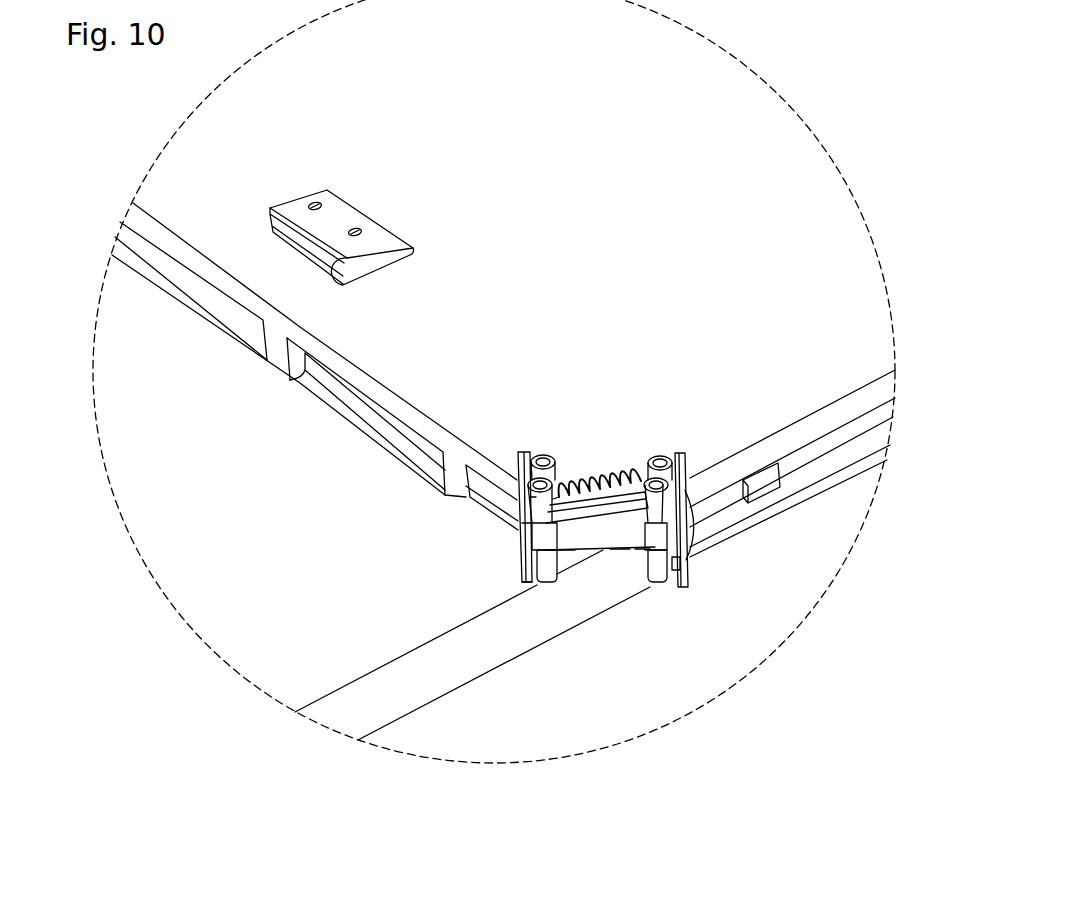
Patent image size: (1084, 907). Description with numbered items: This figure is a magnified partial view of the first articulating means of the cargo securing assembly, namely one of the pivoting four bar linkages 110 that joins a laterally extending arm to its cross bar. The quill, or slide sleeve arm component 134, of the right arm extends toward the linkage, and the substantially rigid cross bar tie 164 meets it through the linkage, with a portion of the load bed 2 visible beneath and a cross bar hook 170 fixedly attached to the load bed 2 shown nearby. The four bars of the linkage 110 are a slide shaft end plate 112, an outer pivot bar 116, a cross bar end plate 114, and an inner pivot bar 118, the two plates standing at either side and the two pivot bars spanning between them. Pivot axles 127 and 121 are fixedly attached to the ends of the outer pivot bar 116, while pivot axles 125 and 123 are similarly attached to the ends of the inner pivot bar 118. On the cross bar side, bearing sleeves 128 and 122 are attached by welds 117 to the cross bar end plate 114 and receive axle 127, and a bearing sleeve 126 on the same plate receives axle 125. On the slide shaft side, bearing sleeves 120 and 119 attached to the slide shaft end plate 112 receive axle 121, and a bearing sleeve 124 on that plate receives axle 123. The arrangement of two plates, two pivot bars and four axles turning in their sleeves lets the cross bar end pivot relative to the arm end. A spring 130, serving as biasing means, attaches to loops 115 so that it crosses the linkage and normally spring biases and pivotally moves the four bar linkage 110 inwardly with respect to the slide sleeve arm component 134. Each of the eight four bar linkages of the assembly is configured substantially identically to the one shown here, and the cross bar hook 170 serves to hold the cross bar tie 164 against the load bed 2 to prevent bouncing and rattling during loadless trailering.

The load bed 2 is at (328, 655).
The pivoting four bar linkage 110 is at (602, 378).
The slide shaft end plate 112 is at (683, 462).
The cross bar end plate 114 is at (525, 452).
The loops 115 is at (563, 487).
The outer pivot bar 116 is at (565, 550).
The welds 117 is at (520, 523).
The inner pivot bar 118 is at (630, 507).
The bearing sleeve 119 is at (653, 592).
The bearing sleeve 120 is at (693, 562).
The pivot axle 121 is at (695, 480).
The bearing sleeve 122 is at (547, 573).
The pivot axle 123 is at (665, 478).
The bearing sleeve 124 is at (662, 457).
The pivot axle 125 is at (541, 456).
The bearing sleeve 126 is at (552, 478).
The pivot axle 127 is at (545, 478).
The bearing sleeve 128 is at (537, 585).
The spring 130 is at (597, 485).
The quill (slide sleeve arm component) 134 is at (847, 407).
The cross bar tie 164 is at (210, 320).
The cross bar hook 170 is at (345, 225).